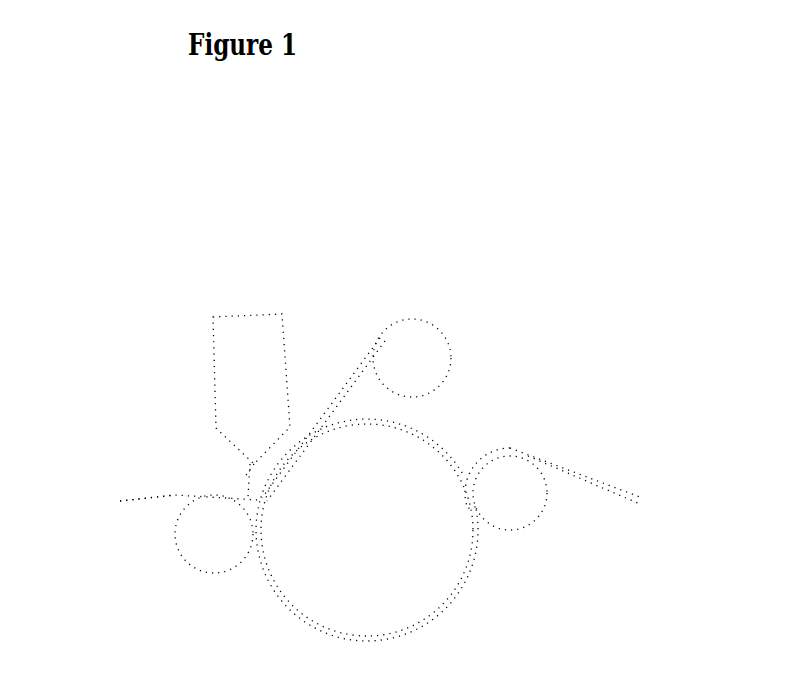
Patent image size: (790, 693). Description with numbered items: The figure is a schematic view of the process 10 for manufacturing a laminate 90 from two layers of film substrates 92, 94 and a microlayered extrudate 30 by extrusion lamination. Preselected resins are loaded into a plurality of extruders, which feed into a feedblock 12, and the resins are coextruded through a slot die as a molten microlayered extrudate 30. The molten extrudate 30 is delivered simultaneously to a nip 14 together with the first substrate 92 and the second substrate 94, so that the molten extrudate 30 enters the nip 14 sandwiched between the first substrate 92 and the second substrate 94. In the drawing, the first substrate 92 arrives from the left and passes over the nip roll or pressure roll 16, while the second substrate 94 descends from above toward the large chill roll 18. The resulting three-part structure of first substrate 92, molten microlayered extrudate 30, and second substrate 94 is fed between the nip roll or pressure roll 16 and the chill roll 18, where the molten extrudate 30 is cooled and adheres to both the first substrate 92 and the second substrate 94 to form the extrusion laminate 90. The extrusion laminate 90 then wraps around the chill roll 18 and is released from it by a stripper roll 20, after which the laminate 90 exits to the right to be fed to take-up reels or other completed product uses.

The process 10 is at (306, 220).
The feedblock 12 is at (202, 375).
The nip 14 is at (224, 484).
The nip roll or pressure roll 16 is at (214, 534).
The chill roll 18 is at (367, 532).
The stripper roll 20 is at (506, 489).
The microlayered extrudate 30 is at (244, 469).
The laminate 90 is at (600, 495).
The first substrate 92 is at (130, 520).
The second substrate 94 is at (348, 361).